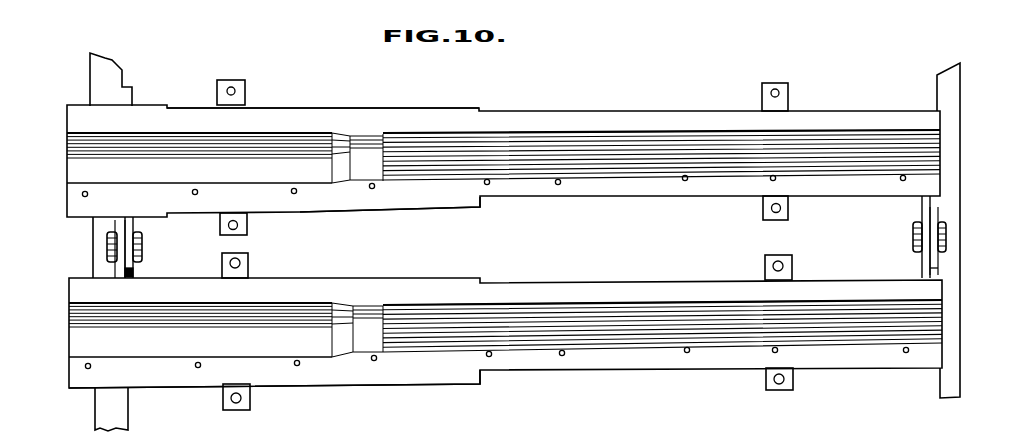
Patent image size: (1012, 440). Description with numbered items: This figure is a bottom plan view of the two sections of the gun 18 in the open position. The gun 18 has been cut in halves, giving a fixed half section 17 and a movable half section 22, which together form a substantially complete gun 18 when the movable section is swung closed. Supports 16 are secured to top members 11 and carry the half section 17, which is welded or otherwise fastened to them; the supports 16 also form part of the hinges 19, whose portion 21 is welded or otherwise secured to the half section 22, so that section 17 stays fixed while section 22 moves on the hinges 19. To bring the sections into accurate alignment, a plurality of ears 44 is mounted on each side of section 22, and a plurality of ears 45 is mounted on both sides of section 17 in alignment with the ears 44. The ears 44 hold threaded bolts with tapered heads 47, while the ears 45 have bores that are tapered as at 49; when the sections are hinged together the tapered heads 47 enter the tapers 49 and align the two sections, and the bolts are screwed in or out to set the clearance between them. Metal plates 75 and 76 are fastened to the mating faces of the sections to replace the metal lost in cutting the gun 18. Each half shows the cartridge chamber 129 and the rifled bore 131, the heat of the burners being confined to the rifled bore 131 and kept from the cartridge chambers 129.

The top member 11 is at (90, 91).
The support 16 is at (135, 224).
The half section 17 is at (333, 258).
The gun 18 is at (63, 213).
The hinge 19 is at (107, 241).
The hinge portion 21 is at (130, 275).
The half section 22 is at (375, 104).
The ear 44 is at (245, 92).
The ear 45 is at (248, 268).
The tapered head 47 is at (233, 87).
The taper 49 is at (247, 262).
The metal plate 75 is at (450, 204).
The metal plate 76 is at (422, 374).
The cartridge chamber 129 is at (187, 148).
The rifled bore 131 is at (612, 140).